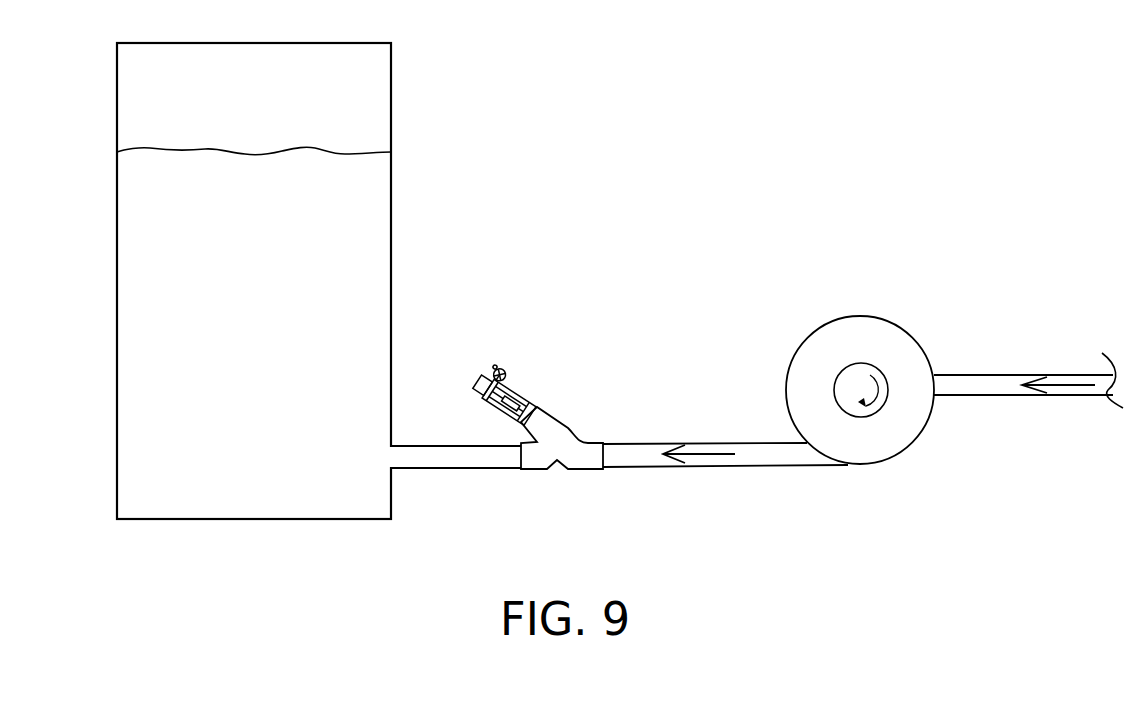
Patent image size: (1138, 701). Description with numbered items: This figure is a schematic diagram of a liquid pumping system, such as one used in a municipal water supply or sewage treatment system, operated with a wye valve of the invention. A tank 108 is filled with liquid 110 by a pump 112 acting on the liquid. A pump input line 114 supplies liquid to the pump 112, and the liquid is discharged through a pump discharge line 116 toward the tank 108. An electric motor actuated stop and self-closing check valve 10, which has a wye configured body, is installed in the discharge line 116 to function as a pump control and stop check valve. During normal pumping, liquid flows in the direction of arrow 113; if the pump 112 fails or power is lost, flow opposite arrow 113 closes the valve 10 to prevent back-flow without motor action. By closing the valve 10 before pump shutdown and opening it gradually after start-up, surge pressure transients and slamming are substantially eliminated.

The electric motor actuated stop and self-closing check valve 10 is at (519, 345).
The tank 108 is at (393, 128).
The liquid 110 is at (279, 353).
The pump 112 is at (902, 328).
The arrow 113 is at (707, 458).
The pump input line 114 is at (972, 375).
The pump discharge line 116 is at (634, 443).